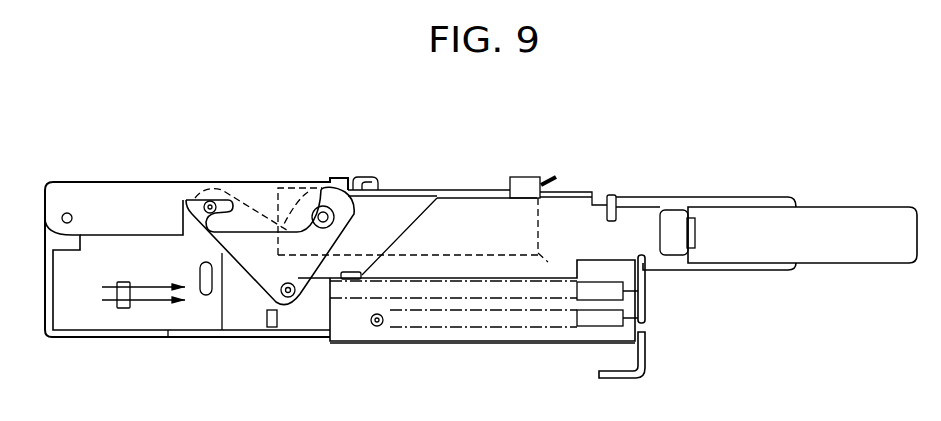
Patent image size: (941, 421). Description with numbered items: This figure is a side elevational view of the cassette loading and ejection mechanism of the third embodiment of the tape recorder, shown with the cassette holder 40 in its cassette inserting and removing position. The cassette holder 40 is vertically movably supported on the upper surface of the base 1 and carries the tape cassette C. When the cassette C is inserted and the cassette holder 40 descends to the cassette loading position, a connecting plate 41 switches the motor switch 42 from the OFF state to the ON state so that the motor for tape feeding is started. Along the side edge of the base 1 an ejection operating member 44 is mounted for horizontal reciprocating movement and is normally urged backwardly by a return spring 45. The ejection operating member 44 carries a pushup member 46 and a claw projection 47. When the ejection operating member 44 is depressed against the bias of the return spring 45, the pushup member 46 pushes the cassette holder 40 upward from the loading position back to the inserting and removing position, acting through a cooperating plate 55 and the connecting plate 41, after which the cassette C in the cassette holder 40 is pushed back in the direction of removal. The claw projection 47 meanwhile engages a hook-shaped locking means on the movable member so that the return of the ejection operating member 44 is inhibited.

The base 1 is at (73, 338).
The cassette holder 40 is at (487, 190).
The connecting plate 41 is at (232, 183).
The motor switch 42 is at (121, 309).
The ejection operating member 44 is at (682, 258).
The return spring 45 is at (528, 344).
The pushup member 46 is at (366, 270).
The claw projection 47 is at (268, 318).
The cooperating plate 55 is at (257, 272).
The tape cassette C is at (783, 200).